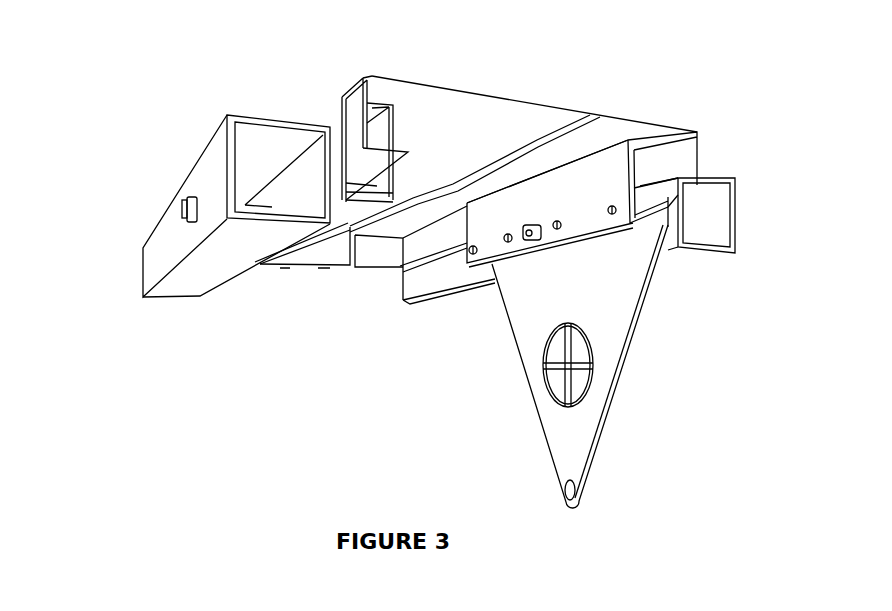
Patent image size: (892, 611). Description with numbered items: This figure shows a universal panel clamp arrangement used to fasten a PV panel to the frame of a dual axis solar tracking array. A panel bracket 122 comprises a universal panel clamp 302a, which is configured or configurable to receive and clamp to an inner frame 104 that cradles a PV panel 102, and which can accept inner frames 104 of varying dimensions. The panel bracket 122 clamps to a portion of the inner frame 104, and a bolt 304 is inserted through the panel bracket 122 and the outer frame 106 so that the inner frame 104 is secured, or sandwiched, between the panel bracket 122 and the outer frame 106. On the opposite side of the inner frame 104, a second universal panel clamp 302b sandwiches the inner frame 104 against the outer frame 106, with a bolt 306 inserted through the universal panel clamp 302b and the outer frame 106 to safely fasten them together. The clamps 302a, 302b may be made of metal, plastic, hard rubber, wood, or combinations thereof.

The photovoltaic solar collecting panel 102 is at (631, 116).
The inner frame 104 is at (349, 88).
The outer frame 106 is at (157, 239).
The panel bracket 122 is at (638, 324).
The universal panel clamp 302a is at (653, 226).
The universal panel clamp 302b is at (363, 211).
The bolt 304 is at (529, 244).
The bolt 306 is at (176, 200).